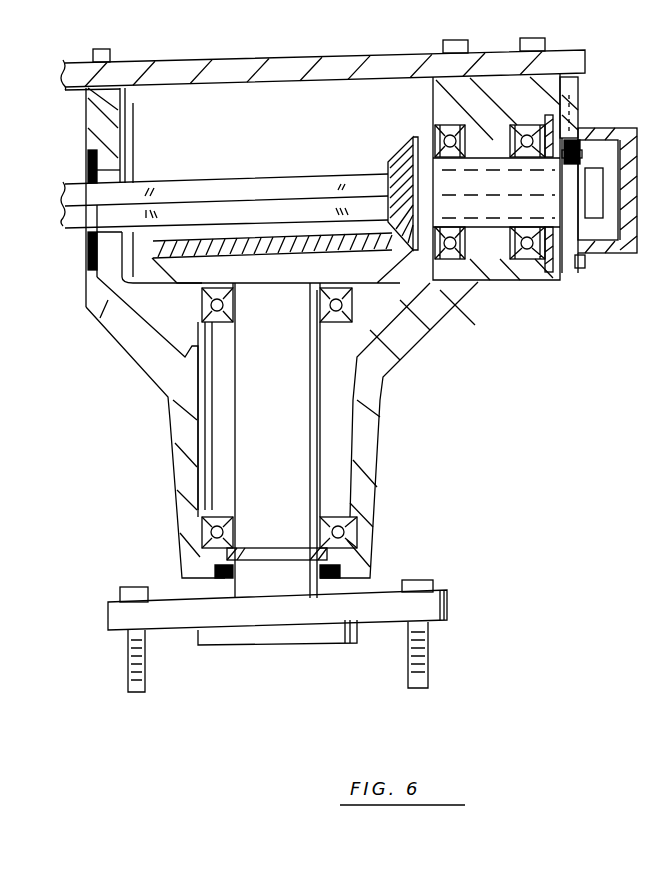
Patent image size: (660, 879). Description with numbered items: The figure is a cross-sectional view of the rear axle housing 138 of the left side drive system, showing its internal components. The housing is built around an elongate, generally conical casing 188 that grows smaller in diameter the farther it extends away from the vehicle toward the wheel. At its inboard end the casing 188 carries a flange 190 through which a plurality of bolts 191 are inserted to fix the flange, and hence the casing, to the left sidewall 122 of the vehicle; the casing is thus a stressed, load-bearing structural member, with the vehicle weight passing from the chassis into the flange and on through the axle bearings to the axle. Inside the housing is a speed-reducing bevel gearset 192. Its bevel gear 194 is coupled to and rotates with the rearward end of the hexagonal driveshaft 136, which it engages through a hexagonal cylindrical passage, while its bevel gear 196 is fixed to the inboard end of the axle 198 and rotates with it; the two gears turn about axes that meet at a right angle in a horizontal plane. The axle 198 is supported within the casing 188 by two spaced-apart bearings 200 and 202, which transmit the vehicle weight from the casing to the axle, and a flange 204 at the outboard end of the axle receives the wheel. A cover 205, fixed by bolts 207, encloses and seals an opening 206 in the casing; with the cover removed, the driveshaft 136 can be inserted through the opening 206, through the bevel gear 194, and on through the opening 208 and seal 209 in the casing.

The left sidewall 122 is at (242, 63).
The bolts 191 is at (105, 50).
The flange 190 is at (86, 112).
The opening 208 is at (78, 164).
The seal 209 is at (88, 250).
The driveshaft 136 is at (147, 185).
The speed-reducing bevel gearset 192 is at (300, 143).
The bevel gear 194 is at (395, 152).
The bevel gear 196 is at (240, 236).
The bearing 200 is at (410, 305).
The casing 188 is at (414, 347).
The axle 198 is at (277, 440).
The bearing 202 is at (355, 530).
The flange 204 is at (448, 600).
The cover 205 is at (608, 126).
The opening 206 is at (580, 154).
The bolts 207 is at (578, 138).
The rear axle housing 138 is at (522, 502).